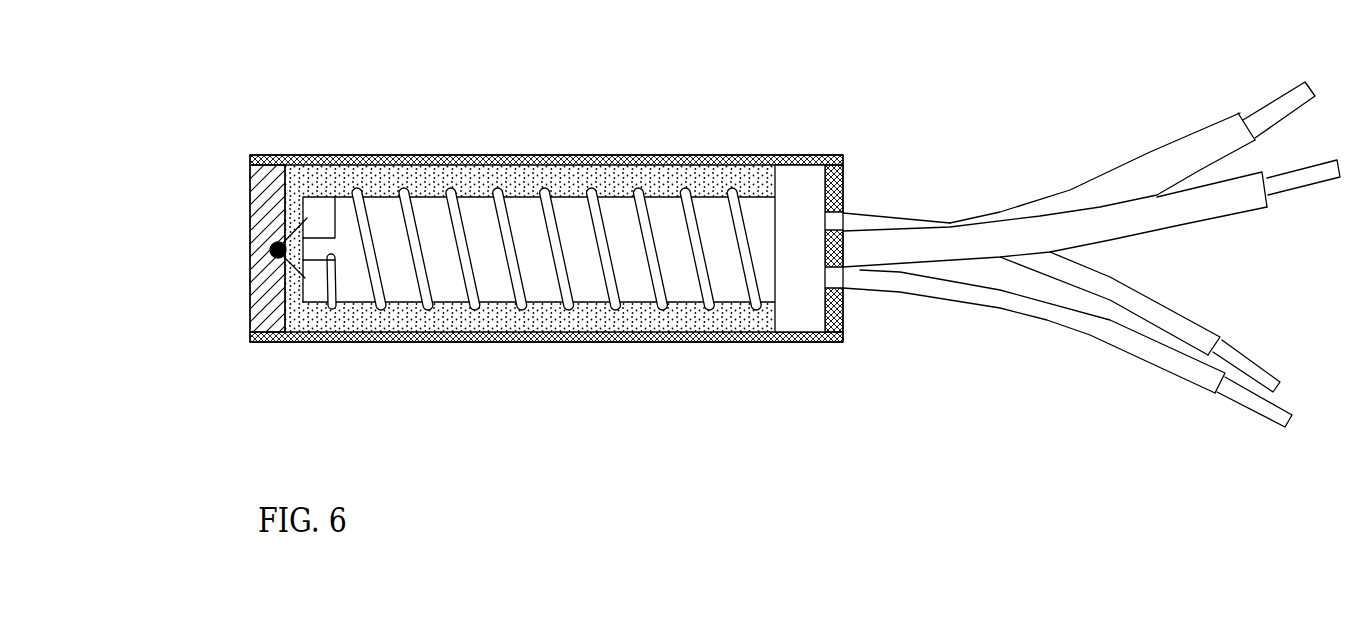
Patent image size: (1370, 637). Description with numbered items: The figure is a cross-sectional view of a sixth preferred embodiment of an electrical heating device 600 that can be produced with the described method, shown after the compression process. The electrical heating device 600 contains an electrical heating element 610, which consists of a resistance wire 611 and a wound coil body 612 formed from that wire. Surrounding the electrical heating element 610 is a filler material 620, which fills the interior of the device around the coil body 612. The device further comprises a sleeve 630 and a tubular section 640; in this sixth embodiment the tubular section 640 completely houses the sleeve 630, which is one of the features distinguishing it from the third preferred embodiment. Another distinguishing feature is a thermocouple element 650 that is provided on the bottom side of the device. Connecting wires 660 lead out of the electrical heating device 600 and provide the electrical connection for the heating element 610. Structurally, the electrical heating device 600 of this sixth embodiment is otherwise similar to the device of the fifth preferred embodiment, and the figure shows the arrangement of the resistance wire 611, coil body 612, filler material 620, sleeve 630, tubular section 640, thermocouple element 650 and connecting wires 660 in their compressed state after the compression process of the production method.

The electrical heating device 600 is at (751, 221).
The electrical heating element 610 is at (401, 312).
The resistance wire 611 is at (541, 333).
The wound coil body 612 is at (665, 250).
The filler material 620 is at (462, 183).
The sleeve 630 is at (348, 155).
The tubular section 640 is at (700, 157).
The thermocouple element 650 is at (267, 253).
The connecting wires 660 is at (913, 248).